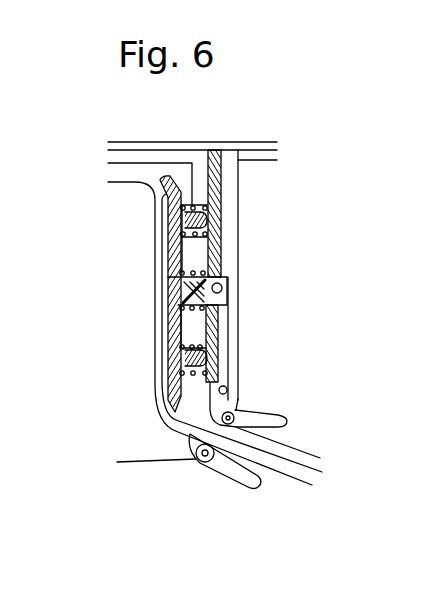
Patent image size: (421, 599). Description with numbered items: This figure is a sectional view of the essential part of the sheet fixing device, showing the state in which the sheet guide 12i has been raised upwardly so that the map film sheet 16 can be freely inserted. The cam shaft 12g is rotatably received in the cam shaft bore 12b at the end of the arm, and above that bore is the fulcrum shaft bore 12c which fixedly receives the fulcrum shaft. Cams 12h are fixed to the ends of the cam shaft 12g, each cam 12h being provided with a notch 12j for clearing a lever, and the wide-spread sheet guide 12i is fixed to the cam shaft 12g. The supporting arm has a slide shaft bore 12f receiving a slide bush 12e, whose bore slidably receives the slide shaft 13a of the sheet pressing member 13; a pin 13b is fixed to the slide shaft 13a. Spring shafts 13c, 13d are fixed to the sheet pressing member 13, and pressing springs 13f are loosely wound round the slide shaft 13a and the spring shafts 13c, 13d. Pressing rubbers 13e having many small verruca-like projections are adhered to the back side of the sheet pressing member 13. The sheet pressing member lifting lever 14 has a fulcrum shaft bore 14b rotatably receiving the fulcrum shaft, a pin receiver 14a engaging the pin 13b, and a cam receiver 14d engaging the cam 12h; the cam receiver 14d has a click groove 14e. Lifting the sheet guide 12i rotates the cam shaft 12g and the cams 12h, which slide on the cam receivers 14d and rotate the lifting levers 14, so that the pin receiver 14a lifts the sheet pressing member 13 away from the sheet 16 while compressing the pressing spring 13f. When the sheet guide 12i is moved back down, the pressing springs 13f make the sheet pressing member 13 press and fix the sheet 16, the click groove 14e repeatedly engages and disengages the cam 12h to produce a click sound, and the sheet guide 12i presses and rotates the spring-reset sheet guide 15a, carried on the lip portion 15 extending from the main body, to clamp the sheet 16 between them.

The cam shaft bore 12b is at (240, 401).
The fulcrum shaft bore 12c is at (227, 389).
The slide bush 12e is at (238, 275).
The slide shaft bore 12f is at (240, 280).
The cam shaft 12g is at (252, 437).
The cam 12h is at (233, 410).
The sheet guide 12i is at (287, 421).
The notch 12j is at (320, 458).
The sheet pressing member 13 is at (160, 198).
The slide shaft 13a is at (228, 297).
The pin 13b is at (228, 302).
The spring shaft 13c is at (222, 195).
The spring shaft 13d is at (167, 355).
The pressing rubber 13e is at (180, 280).
The pressing spring 13f is at (181, 233).
The sheet pressing member lifting lever 14 is at (229, 336).
The pin receiver 14a is at (224, 214).
The fulcrum shaft bore 14b is at (230, 368).
The cam receiver 14d is at (224, 230).
The click groove 14e is at (183, 417).
The lip portion 15 is at (140, 461).
The sheet guide 15a is at (228, 477).
The map film sheet 16 is at (275, 472).